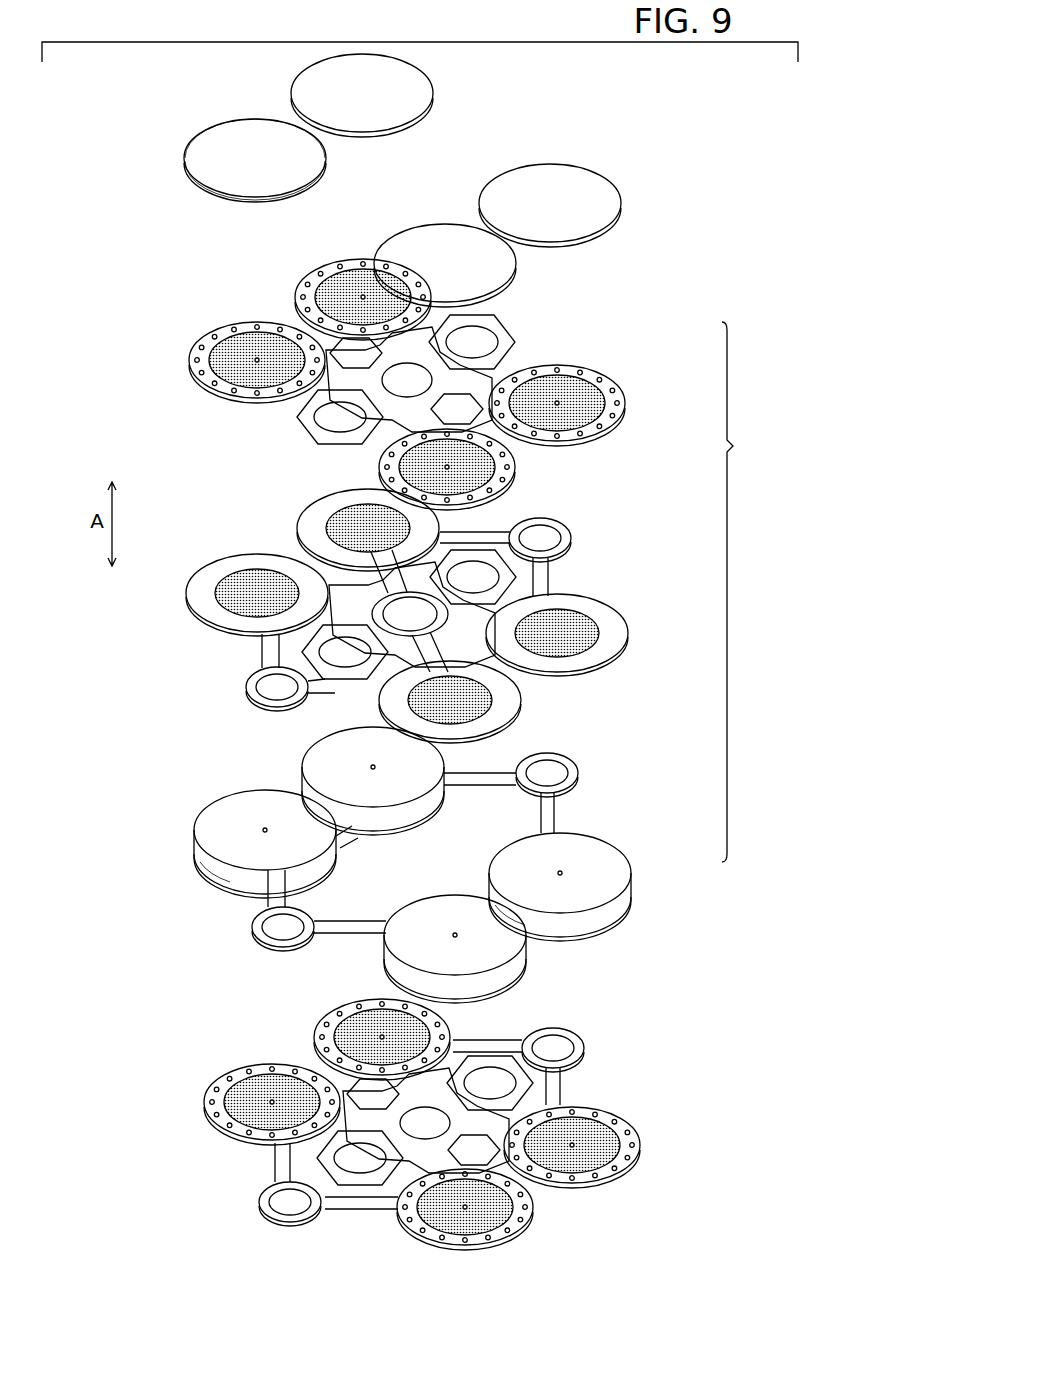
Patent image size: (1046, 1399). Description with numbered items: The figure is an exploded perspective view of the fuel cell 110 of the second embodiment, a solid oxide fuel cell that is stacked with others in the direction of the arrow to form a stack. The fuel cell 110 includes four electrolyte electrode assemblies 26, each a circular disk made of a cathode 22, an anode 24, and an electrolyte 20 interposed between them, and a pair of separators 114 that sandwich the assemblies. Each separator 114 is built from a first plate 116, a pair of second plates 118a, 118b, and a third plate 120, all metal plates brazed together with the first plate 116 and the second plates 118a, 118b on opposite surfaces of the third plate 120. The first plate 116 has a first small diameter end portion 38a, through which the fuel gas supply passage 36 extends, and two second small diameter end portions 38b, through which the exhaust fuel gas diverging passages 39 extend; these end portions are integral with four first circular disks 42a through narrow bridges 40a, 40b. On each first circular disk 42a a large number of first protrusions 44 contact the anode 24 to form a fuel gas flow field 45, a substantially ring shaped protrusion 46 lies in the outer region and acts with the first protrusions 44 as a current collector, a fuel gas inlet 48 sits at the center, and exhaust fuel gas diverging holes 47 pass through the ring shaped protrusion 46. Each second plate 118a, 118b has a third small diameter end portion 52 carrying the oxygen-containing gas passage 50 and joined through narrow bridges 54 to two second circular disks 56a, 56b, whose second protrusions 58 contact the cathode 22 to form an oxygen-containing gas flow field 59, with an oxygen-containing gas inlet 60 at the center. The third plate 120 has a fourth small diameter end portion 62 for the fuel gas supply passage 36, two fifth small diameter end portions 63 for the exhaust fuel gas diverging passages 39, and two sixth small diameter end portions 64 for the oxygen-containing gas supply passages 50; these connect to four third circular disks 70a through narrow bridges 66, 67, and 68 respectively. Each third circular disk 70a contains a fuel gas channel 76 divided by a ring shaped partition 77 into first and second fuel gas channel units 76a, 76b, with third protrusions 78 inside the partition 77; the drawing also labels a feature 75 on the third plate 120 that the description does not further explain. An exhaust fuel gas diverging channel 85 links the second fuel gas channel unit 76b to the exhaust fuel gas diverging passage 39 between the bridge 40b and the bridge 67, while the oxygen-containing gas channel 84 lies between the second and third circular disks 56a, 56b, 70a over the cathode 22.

The fuel cell 110 is at (98, 103).
The electrolyte 20 is at (231, 161).
The cathode 22 is at (198, 148).
The anode 24 is at (200, 177).
The electrolyte electrode assembly 26 is at (553, 160).
The first plate 116 is at (430, 380).
The first circular disk 42a is at (298, 272).
The fuel gas supply passage 36 is at (407, 377).
The exhaust fuel gas diverging passage 39 is at (472, 338).
The second small diameter end portion 38b is at (485, 322).
The first small diameter end portion 38a is at (437, 395).
The narrow bridge 40a is at (356, 353).
The narrow bridge 40b is at (517, 367).
The substantially ring shaped protrusion 46 is at (238, 366).
The exhaust fuel gas diverging hole 47 is at (217, 330).
The fuel gas inlet 48 is at (240, 330).
The first protrusion 44 is at (209, 417).
The fuel gas flow field 45 is at (209, 433).
The separator 114 is at (733, 446).
The third plate 120 is at (404, 627).
The fourth small diameter end portion 62 is at (300, 535).
The narrow bridge 66 is at (478, 628).
The fuel gas channel 76 is at (211, 595).
The first fuel gas channel unit 76a is at (195, 590).
The second fuel gas channel unit 76b is at (138, 580).
The third circular disk 70a is at (597, 677).
The partition 77 is at (497, 708).
The boss portion 75 is at (473, 577).
The fifth small diameter end portion 63 is at (345, 660).
The exhaust fuel gas diverging channel 85 is at (549, 570).
The narrow bridge 68 is at (549, 586).
The oxygen-containing gas supply passage 50 is at (545, 542).
The sixth small diameter end portion 64 is at (549, 519).
The third small diameter end portion 52 is at (583, 777).
The narrow bridge 54 is at (557, 817).
The second plate 118a is at (592, 868).
The second plate 118b is at (232, 824).
The second circular disk 56a is at (618, 870).
The second circular disk 56b is at (258, 805).
The second protrusion 58 is at (338, 861).
The oxygen-containing gas flow field 59 is at (507, 853).
The narrow bridge 67 is at (372, 765).
The oxygen-containing gas inlet 60 is at (457, 932).
The third protrusion 78 is at (480, 779).
The oxygen-containing gas channel 84 is at (323, 837).